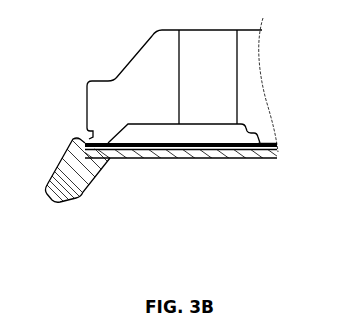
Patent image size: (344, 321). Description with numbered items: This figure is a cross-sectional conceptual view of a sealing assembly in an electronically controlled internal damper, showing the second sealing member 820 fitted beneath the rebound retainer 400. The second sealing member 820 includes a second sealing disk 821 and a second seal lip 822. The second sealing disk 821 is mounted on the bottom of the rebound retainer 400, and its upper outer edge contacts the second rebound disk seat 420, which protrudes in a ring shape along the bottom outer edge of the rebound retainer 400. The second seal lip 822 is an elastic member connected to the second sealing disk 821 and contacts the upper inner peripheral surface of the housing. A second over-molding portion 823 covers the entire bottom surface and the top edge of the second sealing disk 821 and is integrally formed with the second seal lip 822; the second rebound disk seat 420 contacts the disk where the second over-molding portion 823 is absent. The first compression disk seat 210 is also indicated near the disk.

The rebound retainer 400 is at (123, 86).
The second rebound disk seat 420 is at (92, 134).
The second sealing disk 821 is at (173, 148).
The second sealing member 820 is at (190, 201).
The second seal lip 822 is at (73, 197).
The second over-molding portion 823 is at (76, 139).
The first compression disk seat 210 is at (257, 147).